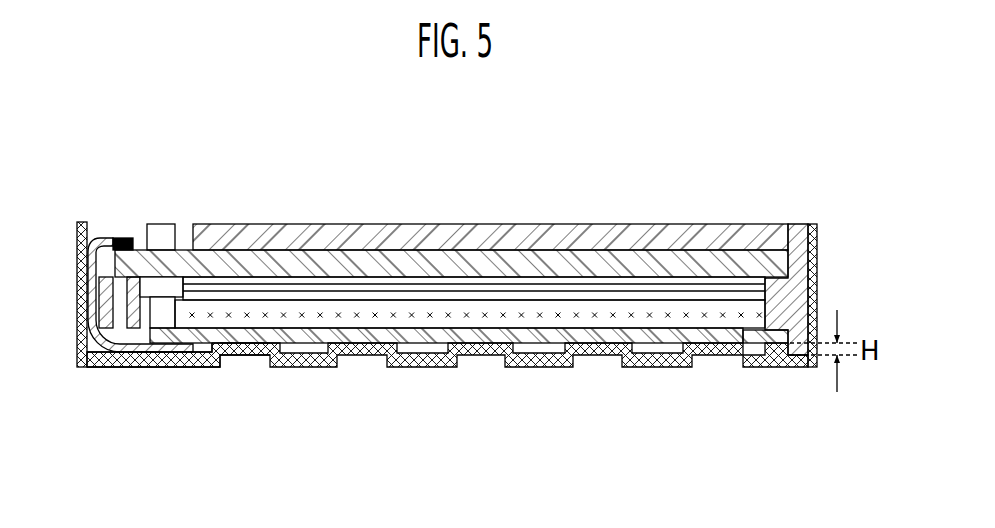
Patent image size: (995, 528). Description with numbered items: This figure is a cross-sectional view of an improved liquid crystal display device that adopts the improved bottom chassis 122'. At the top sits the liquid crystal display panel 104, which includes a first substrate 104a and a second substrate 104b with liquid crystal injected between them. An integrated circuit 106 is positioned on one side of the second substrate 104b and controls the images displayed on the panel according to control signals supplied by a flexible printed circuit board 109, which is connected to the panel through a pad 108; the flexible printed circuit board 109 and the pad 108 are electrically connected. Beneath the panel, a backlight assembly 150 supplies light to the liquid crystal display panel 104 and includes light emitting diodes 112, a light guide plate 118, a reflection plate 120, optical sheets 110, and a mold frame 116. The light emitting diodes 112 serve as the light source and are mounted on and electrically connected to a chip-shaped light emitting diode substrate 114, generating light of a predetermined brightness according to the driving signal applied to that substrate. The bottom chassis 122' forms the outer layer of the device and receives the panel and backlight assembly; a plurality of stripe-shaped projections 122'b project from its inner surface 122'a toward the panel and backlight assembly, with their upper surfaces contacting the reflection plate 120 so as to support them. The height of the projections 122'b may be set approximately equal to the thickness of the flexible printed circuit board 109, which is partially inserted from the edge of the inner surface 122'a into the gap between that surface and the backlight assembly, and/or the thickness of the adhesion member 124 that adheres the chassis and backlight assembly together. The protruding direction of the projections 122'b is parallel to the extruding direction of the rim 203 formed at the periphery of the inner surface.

The rim 203 is at (75, 236).
The flexible printed circuit board 109 is at (90, 237).
The pad 108 is at (122, 237).
The integrated circuit 106 is at (162, 224).
The liquid crystal display panel 104 is at (451, 193).
The first substrate 104a is at (404, 248).
The second substrate 104b is at (473, 267).
The backlight assembly 150 is at (447, 387).
The light emitting diode substrate 114 is at (158, 285).
The light emitting diodes 112 is at (167, 318).
The optical sheets 110 is at (500, 290).
The light guide plate 118 is at (547, 318).
The reflection plate 120 is at (598, 343).
The mold frame 116 is at (755, 312).
The adhesion member 124 is at (772, 365).
The bottom chassis 122' is at (196, 420).
The inner surface 122'a is at (167, 399).
The projection 122'b is at (261, 399).